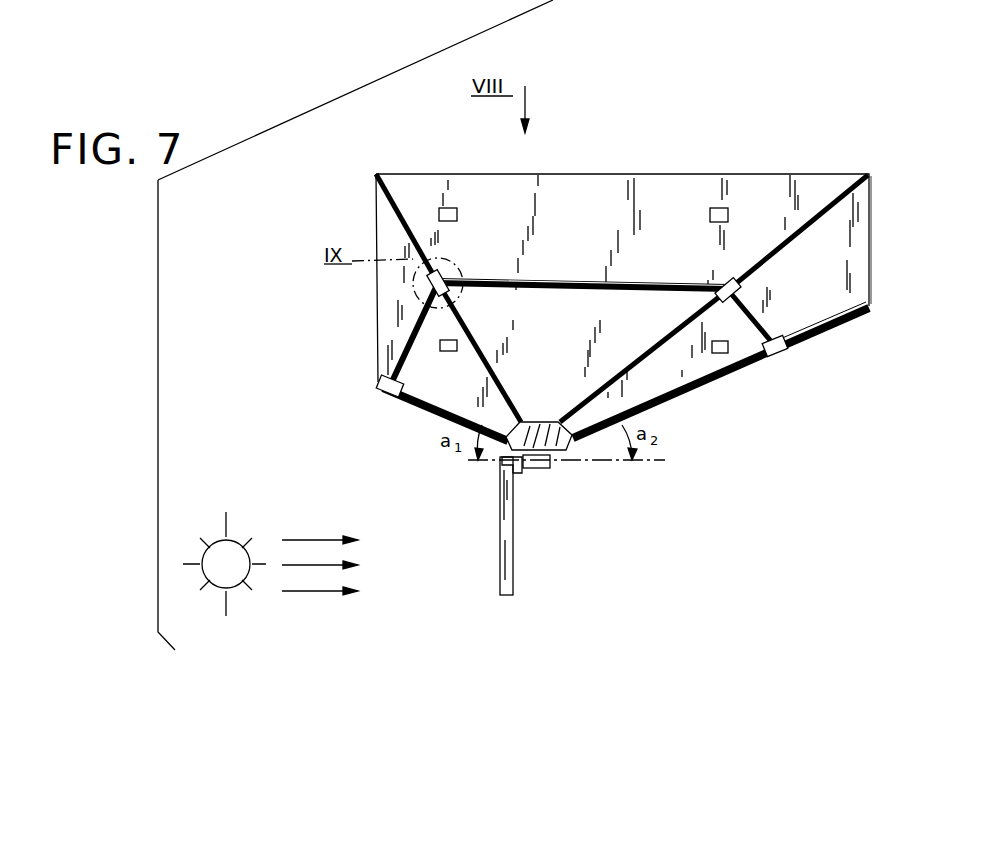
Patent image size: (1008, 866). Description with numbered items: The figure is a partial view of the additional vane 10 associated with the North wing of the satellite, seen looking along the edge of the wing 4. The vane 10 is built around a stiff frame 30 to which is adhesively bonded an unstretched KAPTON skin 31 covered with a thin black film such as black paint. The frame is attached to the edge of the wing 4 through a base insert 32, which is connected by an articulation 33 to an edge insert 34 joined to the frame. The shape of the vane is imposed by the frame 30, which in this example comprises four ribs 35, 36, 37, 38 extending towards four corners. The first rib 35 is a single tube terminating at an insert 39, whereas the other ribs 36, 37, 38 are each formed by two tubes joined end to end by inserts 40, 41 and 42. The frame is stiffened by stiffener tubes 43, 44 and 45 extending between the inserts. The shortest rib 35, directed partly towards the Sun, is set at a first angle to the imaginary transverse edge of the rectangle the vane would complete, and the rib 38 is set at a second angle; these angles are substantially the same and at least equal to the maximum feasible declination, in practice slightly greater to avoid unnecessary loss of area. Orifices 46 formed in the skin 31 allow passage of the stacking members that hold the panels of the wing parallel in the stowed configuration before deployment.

The wing 4 is at (500, 548).
The additional vane 10 is at (842, 373).
The stiff frame 30 is at (777, 252).
The skin 31 is at (604, 187).
The base insert 32 is at (552, 449).
The articulation 33 is at (536, 470).
The edge insert 34 is at (504, 464).
The first rib 35 is at (432, 414).
The rib 36 is at (507, 378).
The rib 37 is at (658, 345).
The rib 38 is at (841, 323).
The insert 39 is at (378, 389).
The insert 40 is at (449, 280).
The insert 41 is at (744, 293).
The insert 42 is at (778, 356).
The stiffener tube 43 is at (410, 340).
The stiffener tube 44 is at (558, 279).
The stiffener tube 45 is at (772, 324).
The orifices 46 is at (457, 214).